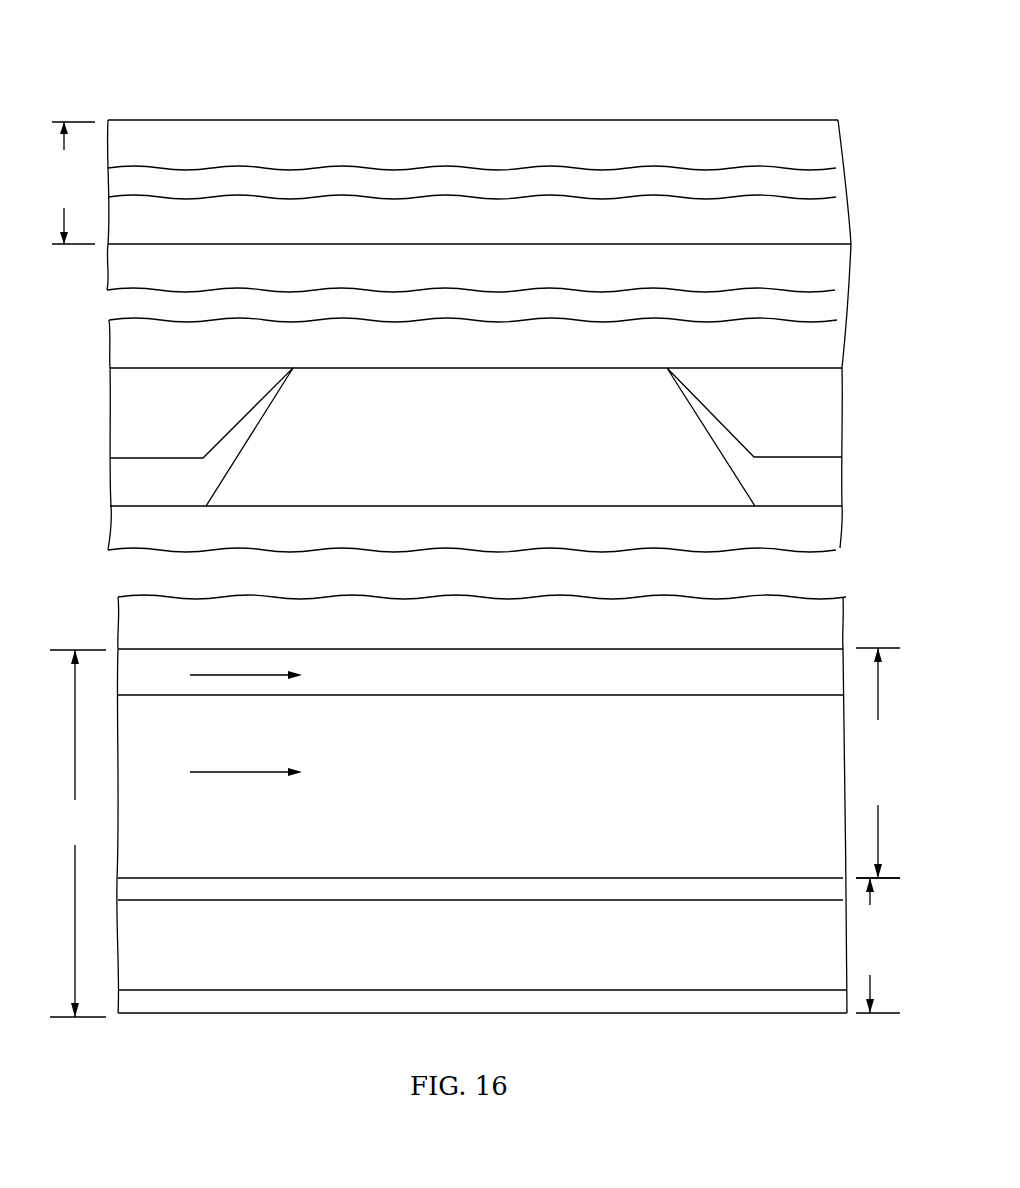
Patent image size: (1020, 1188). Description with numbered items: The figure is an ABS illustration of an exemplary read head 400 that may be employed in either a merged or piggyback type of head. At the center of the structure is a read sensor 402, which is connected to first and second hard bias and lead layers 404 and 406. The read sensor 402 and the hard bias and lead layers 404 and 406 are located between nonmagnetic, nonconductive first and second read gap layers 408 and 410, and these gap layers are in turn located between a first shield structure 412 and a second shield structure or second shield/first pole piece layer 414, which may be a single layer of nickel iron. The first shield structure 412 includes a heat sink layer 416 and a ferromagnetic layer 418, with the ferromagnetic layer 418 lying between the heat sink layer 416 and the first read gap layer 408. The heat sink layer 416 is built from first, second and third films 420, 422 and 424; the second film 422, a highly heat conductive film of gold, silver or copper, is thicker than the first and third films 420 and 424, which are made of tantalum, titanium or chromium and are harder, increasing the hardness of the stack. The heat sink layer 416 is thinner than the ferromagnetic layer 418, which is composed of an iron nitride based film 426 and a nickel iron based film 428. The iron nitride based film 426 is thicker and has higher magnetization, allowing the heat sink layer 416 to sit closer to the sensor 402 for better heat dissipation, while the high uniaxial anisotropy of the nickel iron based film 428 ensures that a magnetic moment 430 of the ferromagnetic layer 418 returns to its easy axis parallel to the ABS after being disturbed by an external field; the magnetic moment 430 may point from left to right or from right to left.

The read head 400 is at (596, 82).
The read sensor 402 is at (337, 384).
The first hard bias and lead layer 404 is at (128, 483).
The second hard bias and lead layer 406 is at (842, 433).
The first read gap layer 408 is at (828, 540).
The second read gap layer 410 is at (845, 272).
The first shield structure 412 is at (478, 852).
The second shield structure 414 is at (845, 150).
The heat sink layer 416 is at (518, 980).
The ferromagnetic layer 418 is at (516, 841).
The first film 420 is at (822, 1003).
The second film 422 is at (763, 945).
The third film 424 is at (697, 893).
The iron nitride based film 426 is at (643, 855).
The nickel iron based film 428 is at (678, 682).
The magnetic moment 430 is at (212, 673).